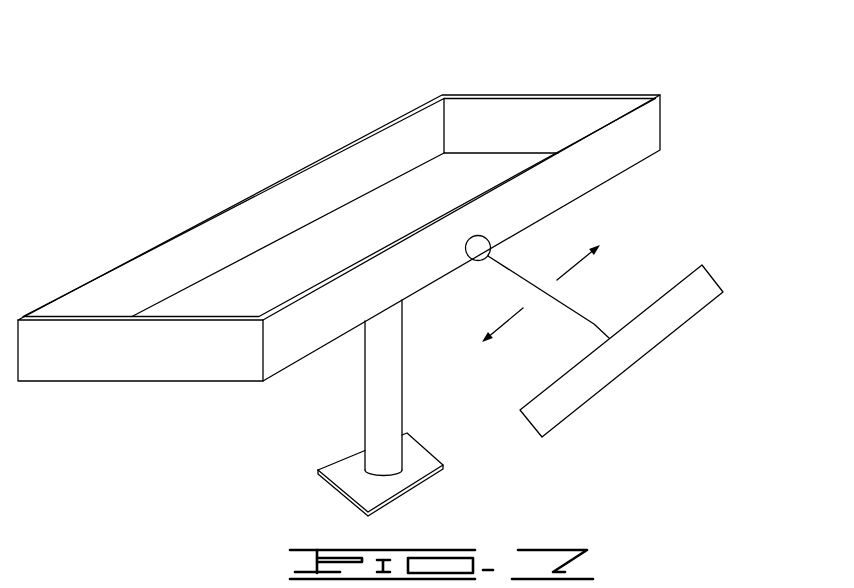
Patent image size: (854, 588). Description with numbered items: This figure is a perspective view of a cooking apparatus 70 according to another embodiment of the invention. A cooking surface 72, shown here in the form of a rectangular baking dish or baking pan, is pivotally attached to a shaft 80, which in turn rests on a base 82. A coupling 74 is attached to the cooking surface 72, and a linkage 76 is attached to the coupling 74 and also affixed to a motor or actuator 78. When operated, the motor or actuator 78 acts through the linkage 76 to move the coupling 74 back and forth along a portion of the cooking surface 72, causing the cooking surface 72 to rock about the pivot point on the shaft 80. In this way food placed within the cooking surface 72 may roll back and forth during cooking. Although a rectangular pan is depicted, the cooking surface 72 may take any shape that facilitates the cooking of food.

The cooking apparatus 70 is at (177, 143).
The cooking surface 72 is at (490, 90).
The coupling 74 is at (500, 243).
The linkage 76 is at (593, 318).
The motor or actuator 78 is at (672, 352).
The shaft 80 is at (345, 407).
The base 82 is at (313, 497).